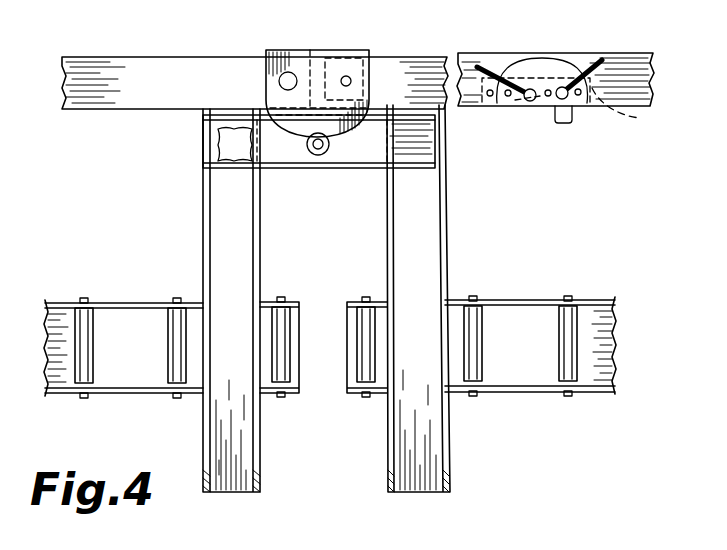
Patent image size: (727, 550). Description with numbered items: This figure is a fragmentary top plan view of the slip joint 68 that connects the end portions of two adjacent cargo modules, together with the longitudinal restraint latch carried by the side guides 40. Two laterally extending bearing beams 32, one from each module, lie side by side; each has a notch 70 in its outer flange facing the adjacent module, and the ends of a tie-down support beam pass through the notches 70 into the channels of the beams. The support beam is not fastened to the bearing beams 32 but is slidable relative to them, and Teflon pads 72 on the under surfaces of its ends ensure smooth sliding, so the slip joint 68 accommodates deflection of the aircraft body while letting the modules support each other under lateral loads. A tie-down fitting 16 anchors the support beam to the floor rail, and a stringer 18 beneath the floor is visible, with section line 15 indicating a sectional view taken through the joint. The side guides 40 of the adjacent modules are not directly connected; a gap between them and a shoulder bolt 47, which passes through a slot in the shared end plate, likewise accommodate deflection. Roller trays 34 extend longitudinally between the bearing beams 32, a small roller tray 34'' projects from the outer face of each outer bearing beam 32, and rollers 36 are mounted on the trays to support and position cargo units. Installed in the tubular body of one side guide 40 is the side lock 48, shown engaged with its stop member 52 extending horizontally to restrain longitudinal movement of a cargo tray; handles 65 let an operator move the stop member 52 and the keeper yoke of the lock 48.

The side guide 40 is at (160, 92).
The shoulder bolt 47 is at (268, 94).
The stringer 18 is at (278, 50).
The section line 15 is at (297, 81).
The tie-down fitting 16 is at (330, 144).
The Teflon pad 72 is at (218, 146).
The notch 70 is at (397, 172).
The slip joint 68 is at (318, 177).
The bearing beam 32 is at (203, 228).
The roller tray 34 is at (329, 315).
The small roller tray 34'' is at (321, 432).
The roller 36 is at (92, 366).
The handle 65 is at (540, 54).
The side lock 48 is at (635, 113).
The stop member 52 is at (564, 124).